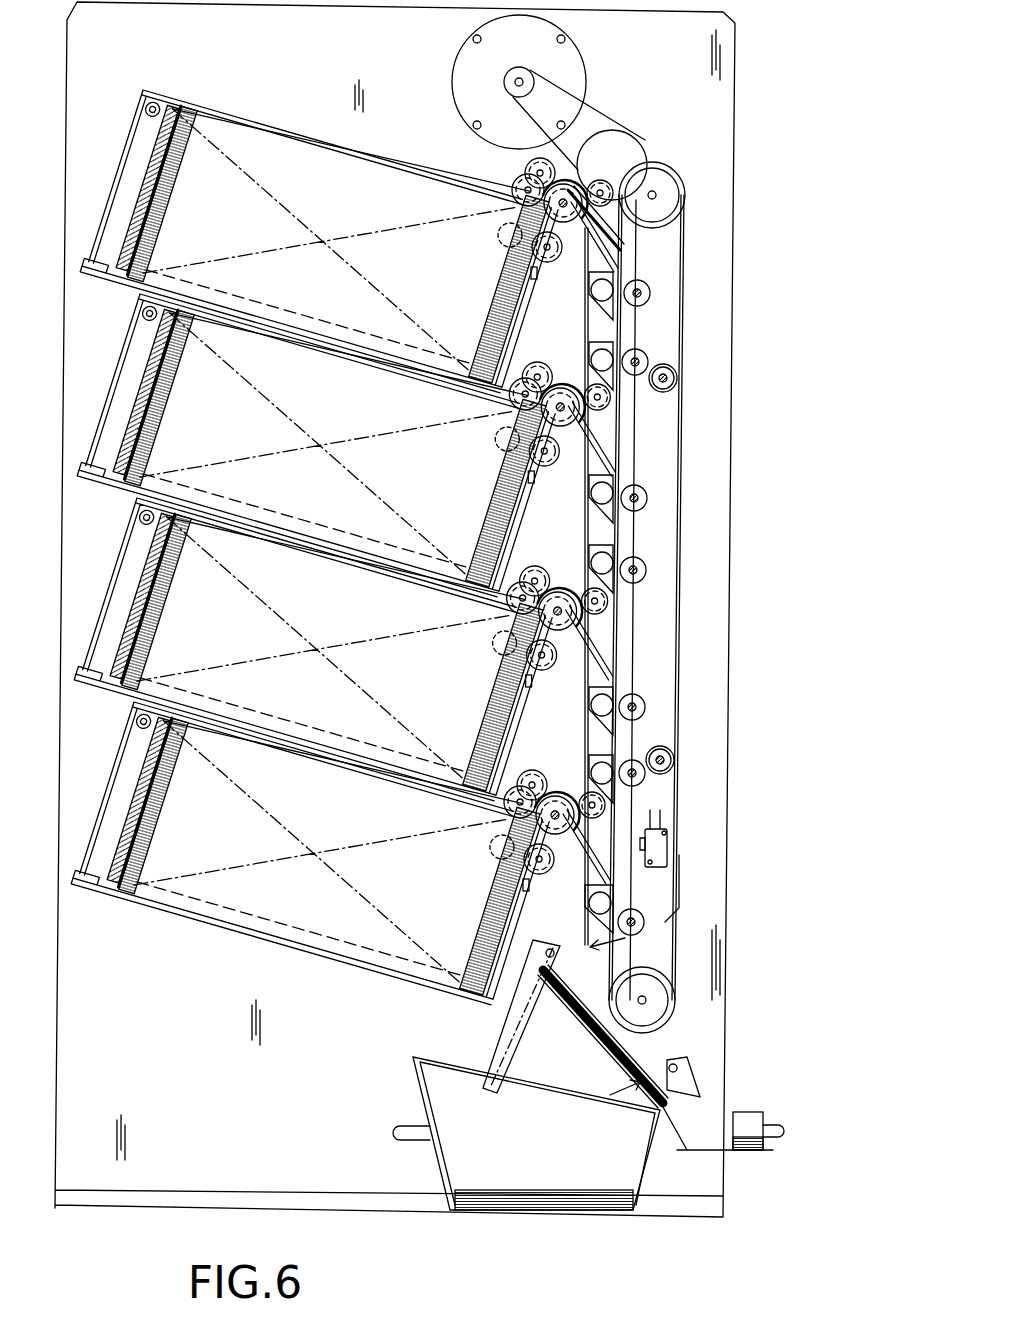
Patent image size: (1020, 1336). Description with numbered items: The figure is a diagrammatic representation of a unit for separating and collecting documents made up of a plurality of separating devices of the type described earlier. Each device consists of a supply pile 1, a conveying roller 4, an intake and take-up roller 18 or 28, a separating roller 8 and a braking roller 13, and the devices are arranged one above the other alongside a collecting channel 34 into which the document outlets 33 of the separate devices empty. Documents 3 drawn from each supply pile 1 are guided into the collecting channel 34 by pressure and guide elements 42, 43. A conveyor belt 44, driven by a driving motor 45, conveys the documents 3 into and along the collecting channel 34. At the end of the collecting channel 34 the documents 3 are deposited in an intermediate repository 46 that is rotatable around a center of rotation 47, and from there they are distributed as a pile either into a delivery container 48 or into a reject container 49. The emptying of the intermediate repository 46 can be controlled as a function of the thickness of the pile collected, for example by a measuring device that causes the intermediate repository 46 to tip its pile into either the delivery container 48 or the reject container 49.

The supply pile 1 is at (130, 180).
The documents 3 is at (497, 284).
The conveying roller 4 is at (560, 250).
The separating roller 8 is at (517, 184).
The braking roller 13 is at (538, 158).
The intake and take-up roller 18 is at (532, 249).
The intake and take-up roller 28 is at (612, 157).
The document outlet 33 is at (607, 238).
The collecting channel 34 is at (622, 340).
The pressure and guide element 42 is at (600, 300).
The pressure and guide element 43 is at (643, 293).
The conveyor belt 44 is at (593, 105).
The driving motor 45 is at (458, 82).
The intermediate repository 46 is at (585, 1020).
The center of rotation 47 is at (552, 948).
The delivery container 48 is at (748, 1118).
The reject container 49 is at (425, 1067).